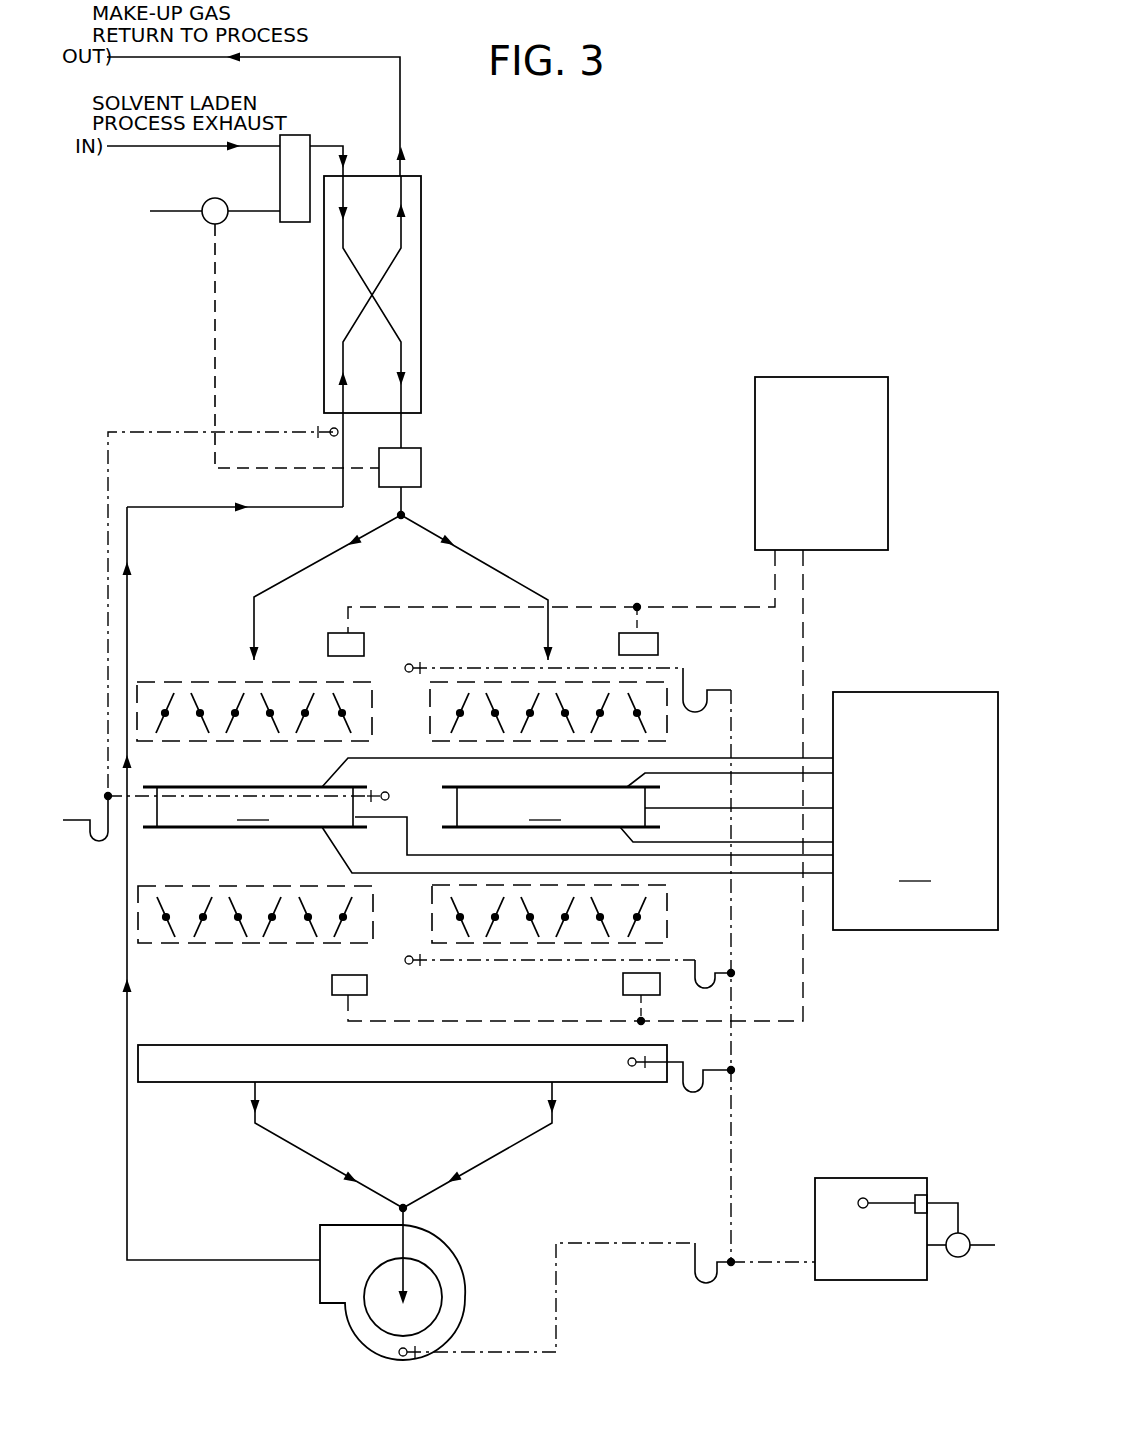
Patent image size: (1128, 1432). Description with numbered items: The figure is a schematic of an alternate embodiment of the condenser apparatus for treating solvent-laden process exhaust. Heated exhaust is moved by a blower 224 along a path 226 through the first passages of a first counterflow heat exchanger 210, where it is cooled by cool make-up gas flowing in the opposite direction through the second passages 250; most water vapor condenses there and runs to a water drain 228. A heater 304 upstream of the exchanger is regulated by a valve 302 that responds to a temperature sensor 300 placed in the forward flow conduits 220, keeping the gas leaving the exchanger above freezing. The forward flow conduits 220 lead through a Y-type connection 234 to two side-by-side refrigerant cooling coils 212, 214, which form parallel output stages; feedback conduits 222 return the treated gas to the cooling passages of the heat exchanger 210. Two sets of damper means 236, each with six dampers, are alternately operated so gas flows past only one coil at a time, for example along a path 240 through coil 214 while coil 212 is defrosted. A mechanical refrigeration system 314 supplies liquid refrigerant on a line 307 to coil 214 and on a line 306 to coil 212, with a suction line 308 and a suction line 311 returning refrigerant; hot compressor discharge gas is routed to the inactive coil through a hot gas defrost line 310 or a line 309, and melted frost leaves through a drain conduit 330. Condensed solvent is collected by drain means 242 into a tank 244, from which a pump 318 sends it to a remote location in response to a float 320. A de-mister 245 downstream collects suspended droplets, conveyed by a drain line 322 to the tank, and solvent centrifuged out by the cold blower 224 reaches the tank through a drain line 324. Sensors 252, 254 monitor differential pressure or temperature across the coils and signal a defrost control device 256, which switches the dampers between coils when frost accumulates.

The first counterflow heat exchanger 210 is at (421, 263).
The second refrigerant cooling coil 212 is at (255, 807).
The third refrigerant cooling coil 214 is at (551, 807).
The forward flow conduits 220 is at (282, 58).
The feedback conduits 222 is at (160, 147).
The blower 224 is at (445, 1275).
The path 226 is at (392, 322).
The water drain 228 is at (145, 432).
The Y-type connection 234 is at (410, 515).
The damper means 236 is at (180, 682).
The path 240 is at (520, 583).
The drain means 242 is at (686, 667).
The tank 244 is at (890, 1178).
The de-mister 245 is at (582, 1082).
The second passages 250 is at (352, 312).
The sensor 252 is at (328, 645).
The sensor 254 is at (658, 650).
The defrost control device 256 is at (755, 468).
The temperature sensor 300 is at (421, 468).
The valve 302 is at (212, 226).
The heater 304 is at (292, 224).
The line 306 is at (755, 758).
The line 307 is at (645, 768).
The suction line 308 is at (768, 842).
The line 309 is at (457, 855).
The hot gas defrost line 310 is at (672, 808).
The suction line 311 is at (557, 873).
The mechanical refrigeration system 314 is at (915, 811).
The pump 318 is at (965, 1236).
The float 320 is at (858, 1201).
The drain line 322 is at (680, 1082).
The drain line 324 is at (556, 1287).
The drain conduit 330 is at (130, 788).